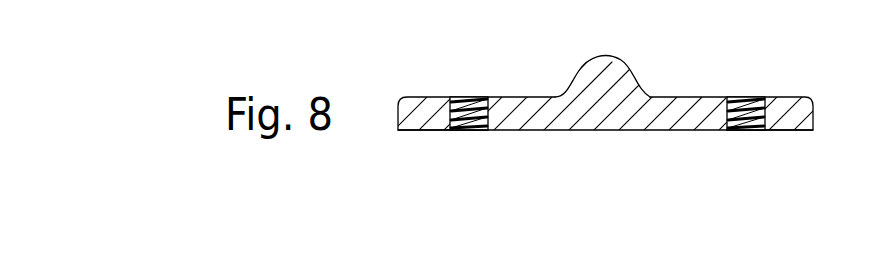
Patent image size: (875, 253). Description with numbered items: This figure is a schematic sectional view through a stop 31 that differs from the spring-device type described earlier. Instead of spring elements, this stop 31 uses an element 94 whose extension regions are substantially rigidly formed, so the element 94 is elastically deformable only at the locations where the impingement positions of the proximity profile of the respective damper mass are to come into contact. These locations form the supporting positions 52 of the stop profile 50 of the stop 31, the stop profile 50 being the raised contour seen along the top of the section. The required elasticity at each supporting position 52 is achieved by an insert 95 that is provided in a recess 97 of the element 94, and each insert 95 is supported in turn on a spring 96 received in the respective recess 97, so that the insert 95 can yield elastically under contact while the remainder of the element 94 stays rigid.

The stop 31 is at (612, 115).
The stop profile 50 is at (640, 80).
The supporting position 52 is at (478, 98).
The element 94 is at (667, 115).
The insert 95 is at (458, 97).
The spring 96 is at (480, 128).
The recess 97 is at (460, 130).